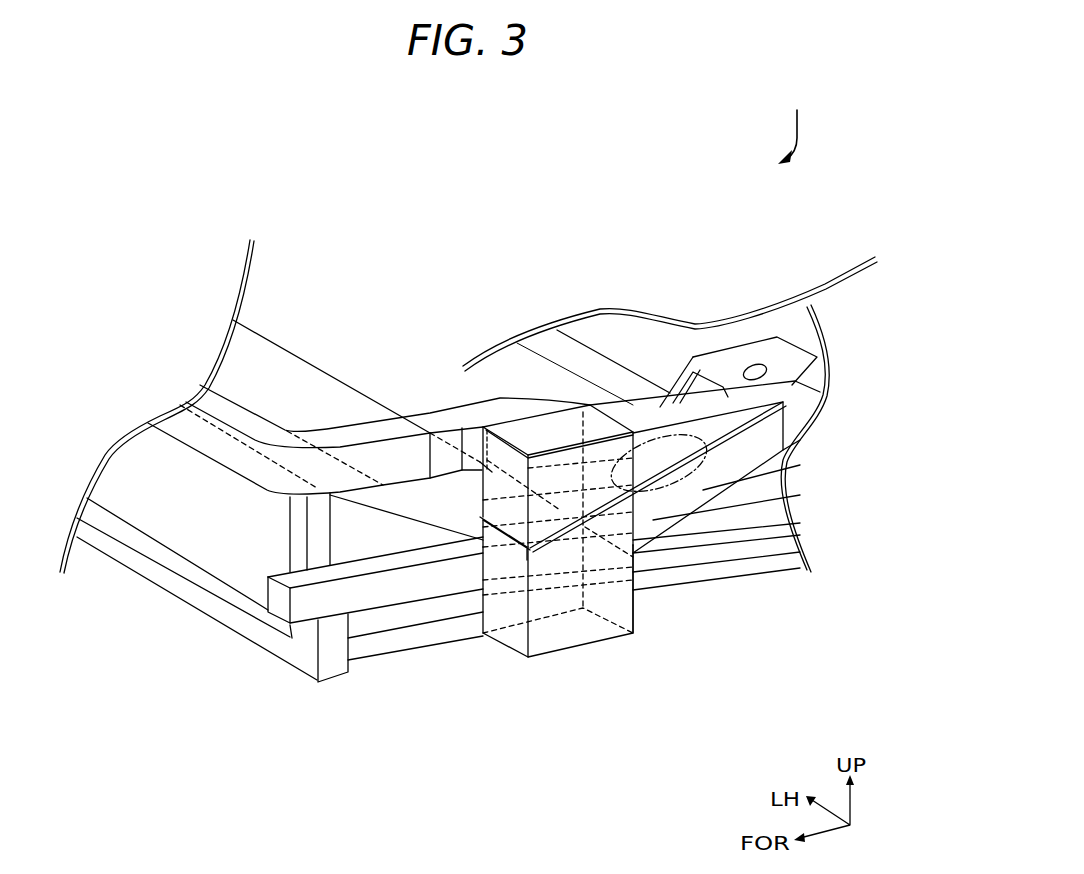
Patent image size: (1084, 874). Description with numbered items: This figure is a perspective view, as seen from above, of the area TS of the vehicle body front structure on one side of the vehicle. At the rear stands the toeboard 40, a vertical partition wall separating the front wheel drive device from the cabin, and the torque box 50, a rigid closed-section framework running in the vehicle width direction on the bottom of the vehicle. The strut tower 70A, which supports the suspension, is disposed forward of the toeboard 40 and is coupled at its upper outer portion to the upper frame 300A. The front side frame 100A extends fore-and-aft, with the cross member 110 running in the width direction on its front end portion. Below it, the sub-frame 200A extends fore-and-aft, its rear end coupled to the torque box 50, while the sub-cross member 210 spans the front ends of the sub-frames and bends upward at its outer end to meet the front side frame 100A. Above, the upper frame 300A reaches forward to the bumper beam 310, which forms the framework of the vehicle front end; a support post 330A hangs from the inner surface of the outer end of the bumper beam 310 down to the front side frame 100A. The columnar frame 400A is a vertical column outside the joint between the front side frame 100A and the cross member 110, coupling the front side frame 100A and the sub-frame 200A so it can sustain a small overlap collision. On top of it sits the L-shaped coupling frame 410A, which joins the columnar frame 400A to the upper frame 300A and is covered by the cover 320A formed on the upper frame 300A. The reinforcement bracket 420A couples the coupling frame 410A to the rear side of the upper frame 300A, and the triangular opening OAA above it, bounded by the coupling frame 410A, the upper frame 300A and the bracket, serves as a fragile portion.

The toeboard 40 is at (770, 330).
The torque box 50 is at (581, 355).
The strut tower 70A is at (727, 363).
The cross member 110 is at (297, 377).
The sub-cross member 210 is at (178, 560).
The bumper beam 310 is at (212, 438).
The cover 320A is at (533, 427).
The support post 330A is at (300, 503).
The front side frame 100A is at (320, 603).
The sub-frame 200A is at (697, 572).
The upper frame 300A is at (650, 415).
The columnar frame 400A is at (568, 622).
The coupling frame 410A is at (512, 507).
The reinforcement bracket 420A is at (643, 517).
The opening OAA is at (706, 485).
The area TS is at (818, 108).